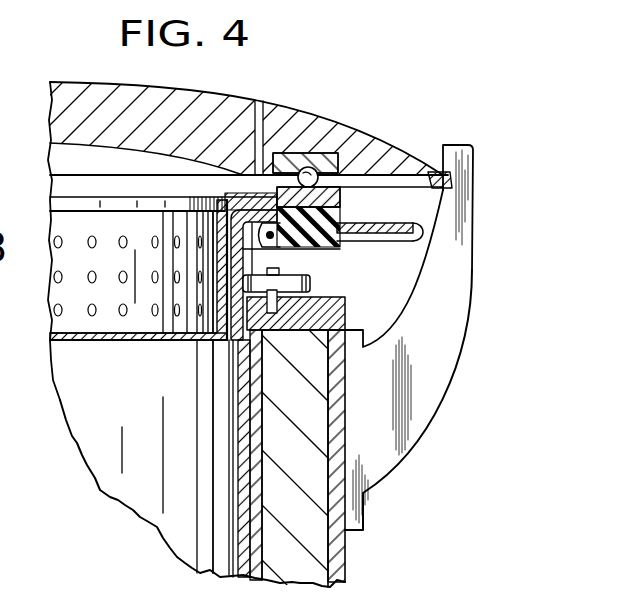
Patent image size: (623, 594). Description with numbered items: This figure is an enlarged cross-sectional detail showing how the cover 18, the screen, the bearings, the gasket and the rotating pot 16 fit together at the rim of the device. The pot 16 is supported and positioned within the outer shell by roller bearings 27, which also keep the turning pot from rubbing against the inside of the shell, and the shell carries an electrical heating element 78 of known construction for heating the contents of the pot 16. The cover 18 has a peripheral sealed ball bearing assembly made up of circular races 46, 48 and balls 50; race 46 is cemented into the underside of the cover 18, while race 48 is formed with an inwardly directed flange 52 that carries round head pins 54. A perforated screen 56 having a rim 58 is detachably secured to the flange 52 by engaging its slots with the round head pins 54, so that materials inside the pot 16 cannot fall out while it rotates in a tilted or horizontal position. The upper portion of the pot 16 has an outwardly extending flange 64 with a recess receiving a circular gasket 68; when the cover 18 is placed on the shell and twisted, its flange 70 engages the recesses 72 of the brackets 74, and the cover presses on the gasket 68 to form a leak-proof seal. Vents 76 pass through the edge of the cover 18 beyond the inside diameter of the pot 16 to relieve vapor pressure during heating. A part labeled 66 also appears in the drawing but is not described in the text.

The rotatable pot 16 is at (85, 420).
The cover 18 is at (73, 115).
The roller bearings 27 is at (322, 295).
The race 46 is at (298, 156).
The race 48 is at (340, 198).
The balls 50 is at (355, 150).
The inwardly directed flange 52 is at (265, 194).
The round head pins 54 is at (261, 230).
The perforated screen 56 is at (108, 317).
The rim 58 is at (229, 197).
The outwardly extending flange 64 is at (417, 242).
The pin 66 is at (311, 282).
The circular gasket 68 is at (340, 234).
The flange 70 is at (433, 172).
The recesses 72 is at (457, 150).
The brackets 74 is at (437, 367).
The vents 76 is at (279, 123).
The electrical heating element 78 is at (310, 463).